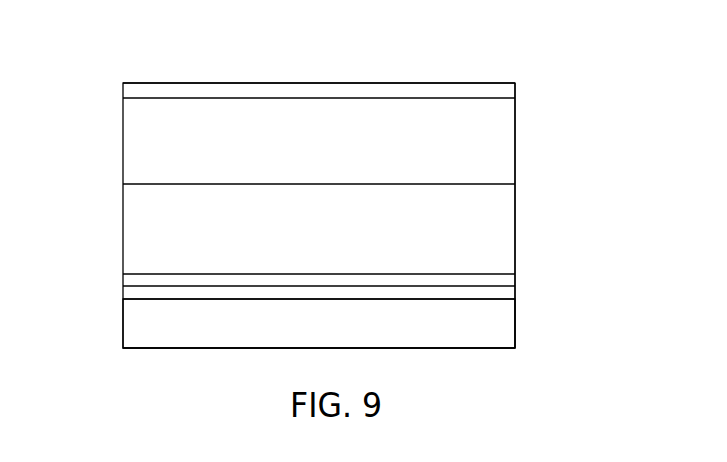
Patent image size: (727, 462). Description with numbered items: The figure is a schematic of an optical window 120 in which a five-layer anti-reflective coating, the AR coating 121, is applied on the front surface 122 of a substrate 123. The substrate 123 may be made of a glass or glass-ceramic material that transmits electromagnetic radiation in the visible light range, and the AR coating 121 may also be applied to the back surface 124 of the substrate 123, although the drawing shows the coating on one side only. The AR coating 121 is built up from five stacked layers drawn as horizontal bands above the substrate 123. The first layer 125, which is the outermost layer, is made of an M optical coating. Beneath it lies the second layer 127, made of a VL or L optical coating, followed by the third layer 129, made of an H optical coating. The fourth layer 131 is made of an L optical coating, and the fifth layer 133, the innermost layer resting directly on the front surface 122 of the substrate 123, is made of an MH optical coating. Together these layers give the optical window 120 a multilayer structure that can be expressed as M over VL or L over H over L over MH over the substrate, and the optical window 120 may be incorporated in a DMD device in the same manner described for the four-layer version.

The optical window 120 is at (298, 69).
The AR coating 121 is at (518, 185).
The front surface 122 is at (488, 294).
The substrate 123 is at (517, 324).
The back surface 124 is at (490, 349).
The first layer 125 is at (516, 93).
The second layer 127 is at (122, 108).
The third layer 129 is at (122, 193).
The fourth layer 131 is at (122, 268).
The fifth layer 133 is at (122, 292).